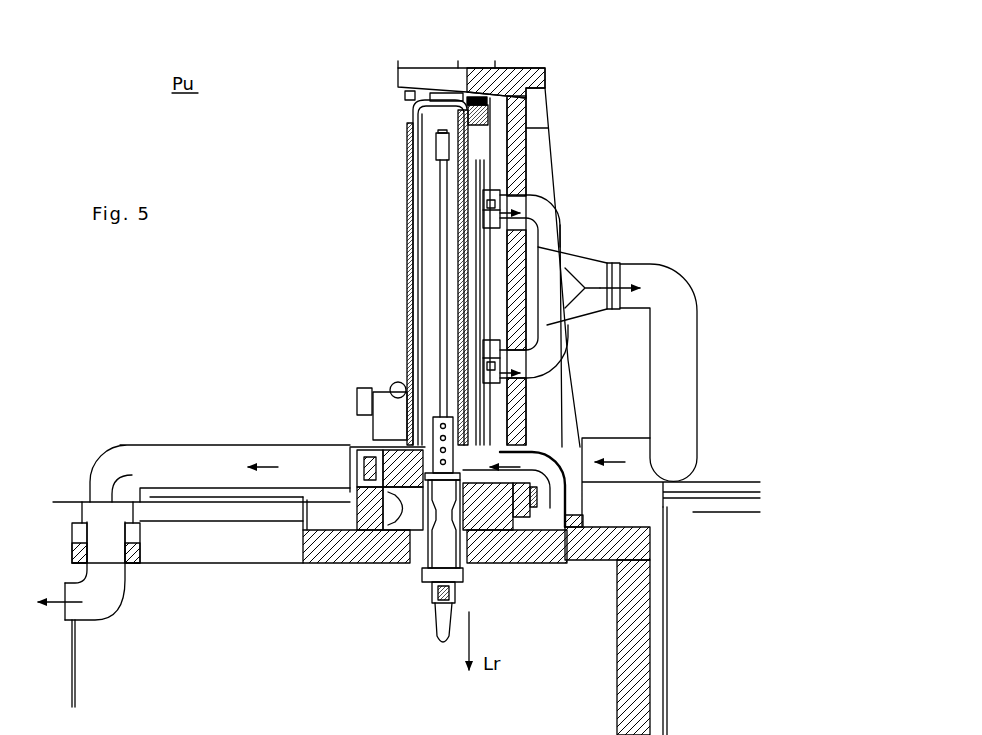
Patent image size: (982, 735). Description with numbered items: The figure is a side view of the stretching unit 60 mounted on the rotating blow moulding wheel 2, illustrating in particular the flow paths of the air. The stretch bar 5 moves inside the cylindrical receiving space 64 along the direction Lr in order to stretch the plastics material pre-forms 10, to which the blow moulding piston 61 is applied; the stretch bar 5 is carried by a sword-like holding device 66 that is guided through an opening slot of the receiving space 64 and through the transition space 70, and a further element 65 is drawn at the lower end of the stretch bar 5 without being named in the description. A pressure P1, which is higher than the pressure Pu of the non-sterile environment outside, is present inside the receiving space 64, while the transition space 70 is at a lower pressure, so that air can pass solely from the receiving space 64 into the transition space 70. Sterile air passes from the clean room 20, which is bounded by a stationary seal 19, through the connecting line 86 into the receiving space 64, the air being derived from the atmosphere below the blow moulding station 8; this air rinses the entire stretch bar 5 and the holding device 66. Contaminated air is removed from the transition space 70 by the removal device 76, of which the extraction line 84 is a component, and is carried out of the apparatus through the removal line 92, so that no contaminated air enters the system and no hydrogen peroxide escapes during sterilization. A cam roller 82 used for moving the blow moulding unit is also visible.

The rotating blow moulding wheel 2 is at (332, 543).
The stretch bar 5 is at (440, 268).
The blow moulding station 8 is at (568, 115).
The plastics material pre-forms 10 is at (440, 628).
The stationary seal 19 is at (73, 653).
The clean room 20 is at (538, 636).
The stretching unit 60 is at (663, 175).
The blow moulding piston 61 is at (443, 553).
The receiving space 64 is at (427, 186).
The coupling 65 is at (423, 435).
The holding device 66 is at (440, 140).
The transition space 70 is at (410, 217).
The removal device 76 is at (677, 258).
The cam roller 82 is at (417, 393).
The extraction line 84 is at (672, 352).
The connecting line 86 is at (550, 503).
The removal line 92 is at (112, 583).
The pressure P1 is at (427, 340).